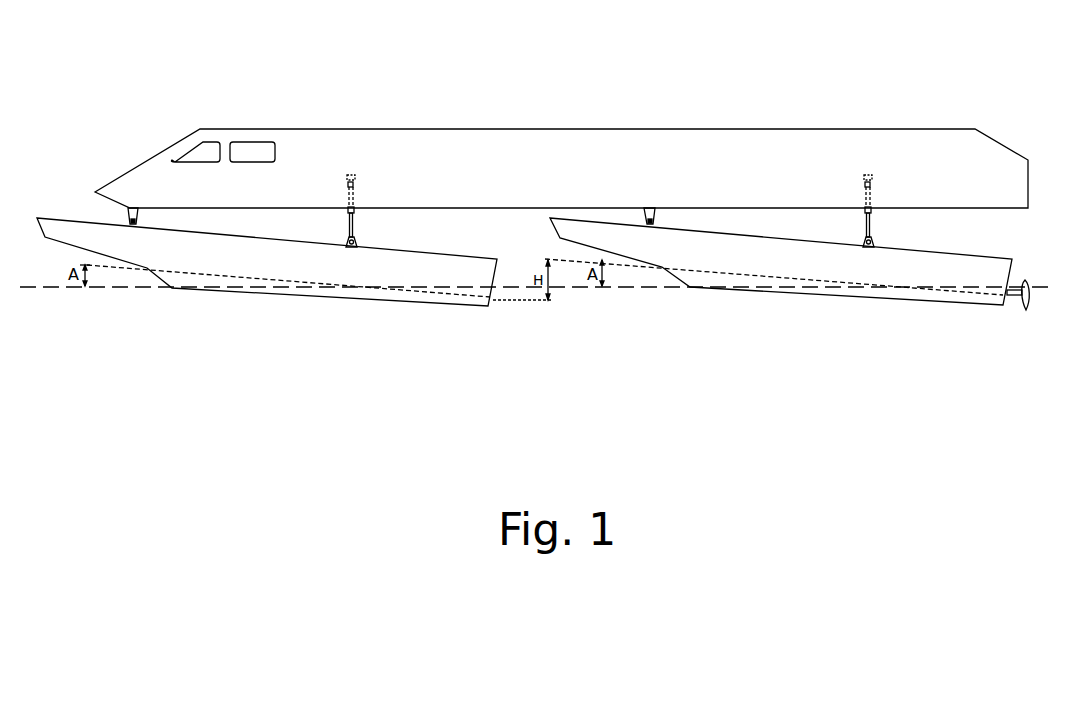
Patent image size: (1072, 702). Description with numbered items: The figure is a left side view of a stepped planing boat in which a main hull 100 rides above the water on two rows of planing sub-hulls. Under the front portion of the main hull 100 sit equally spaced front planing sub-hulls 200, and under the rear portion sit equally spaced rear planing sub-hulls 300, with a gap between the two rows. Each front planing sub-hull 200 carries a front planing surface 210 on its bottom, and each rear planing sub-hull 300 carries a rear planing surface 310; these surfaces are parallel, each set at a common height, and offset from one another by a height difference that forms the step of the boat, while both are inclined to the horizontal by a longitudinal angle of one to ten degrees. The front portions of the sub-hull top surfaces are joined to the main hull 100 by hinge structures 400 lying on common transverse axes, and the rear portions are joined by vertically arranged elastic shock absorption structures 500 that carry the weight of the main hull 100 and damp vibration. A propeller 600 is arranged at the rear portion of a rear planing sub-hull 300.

The main hull 100 is at (747, 167).
The front planing sub-hull 200 is at (382, 265).
The front planing surface 210 is at (248, 277).
The rear planing sub-hull 300 is at (897, 267).
The rear planing surface 310 is at (757, 275).
The hinge structure 400 is at (146, 268).
The elastic shock absorption structure 500 is at (360, 188).
The propeller 600 is at (1023, 300).